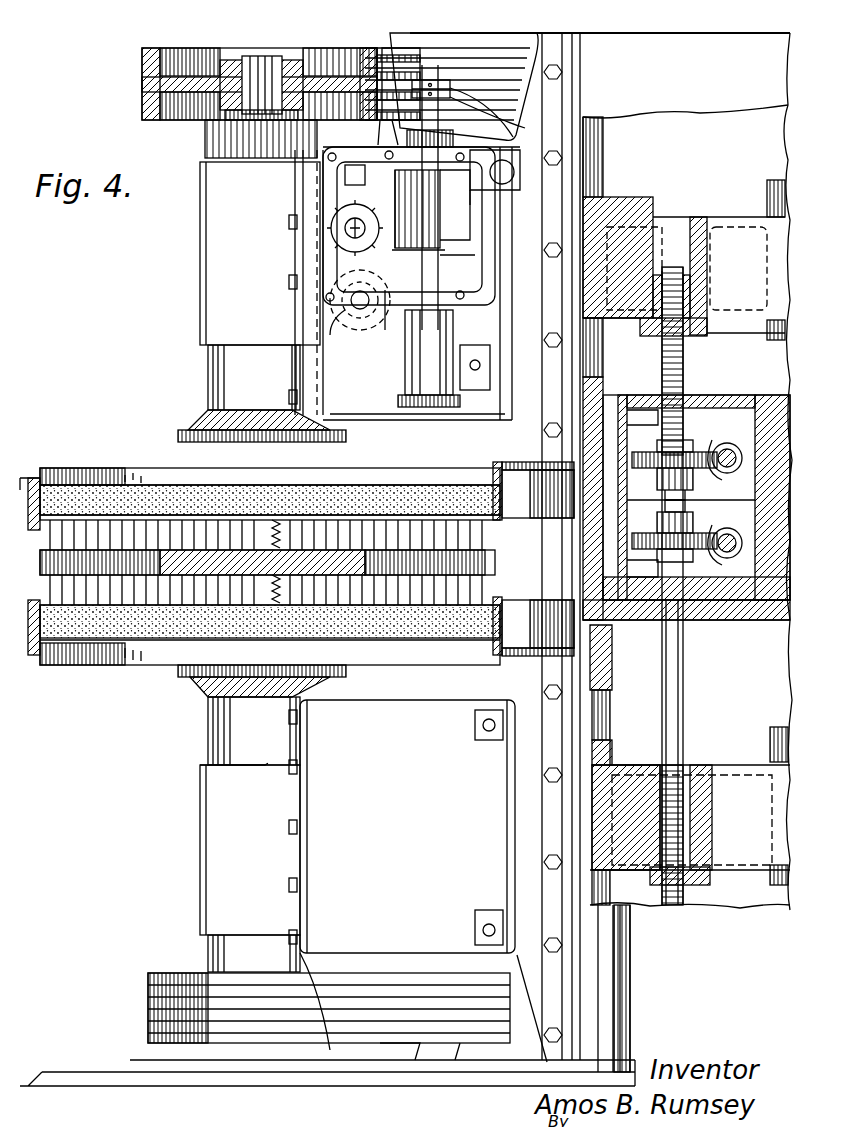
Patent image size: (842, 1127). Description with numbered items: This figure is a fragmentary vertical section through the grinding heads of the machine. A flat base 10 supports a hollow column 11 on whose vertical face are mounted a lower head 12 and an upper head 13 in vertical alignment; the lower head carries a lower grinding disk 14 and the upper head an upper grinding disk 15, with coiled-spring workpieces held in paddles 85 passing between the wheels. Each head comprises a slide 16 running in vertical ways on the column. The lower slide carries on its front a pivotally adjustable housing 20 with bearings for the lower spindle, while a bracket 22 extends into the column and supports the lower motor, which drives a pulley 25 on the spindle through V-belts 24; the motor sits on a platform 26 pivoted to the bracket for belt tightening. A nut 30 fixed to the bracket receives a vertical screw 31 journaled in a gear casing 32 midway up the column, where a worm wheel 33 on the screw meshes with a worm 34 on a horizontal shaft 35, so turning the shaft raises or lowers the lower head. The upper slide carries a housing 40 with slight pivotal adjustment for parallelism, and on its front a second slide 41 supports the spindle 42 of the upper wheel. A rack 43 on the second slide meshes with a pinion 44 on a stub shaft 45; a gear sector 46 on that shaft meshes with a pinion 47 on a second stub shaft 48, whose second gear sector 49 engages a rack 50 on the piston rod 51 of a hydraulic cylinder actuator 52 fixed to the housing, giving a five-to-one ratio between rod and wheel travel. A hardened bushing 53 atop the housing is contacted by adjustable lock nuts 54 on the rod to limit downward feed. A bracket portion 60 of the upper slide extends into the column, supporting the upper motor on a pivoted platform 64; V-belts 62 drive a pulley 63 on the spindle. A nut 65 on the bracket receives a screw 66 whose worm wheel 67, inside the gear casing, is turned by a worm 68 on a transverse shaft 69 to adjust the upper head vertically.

The flat base 10 is at (245, 1088).
The hollow column 11 is at (600, 905).
The lower head 12 is at (194, 831).
The upper head 13 is at (192, 268).
The lower grinding disk 14 is at (80, 620).
The upper grinding disk 15 is at (88, 500).
The slide 16 is at (523, 318).
The housing 20 is at (358, 720).
The bracket 22 is at (635, 770).
The V-belts 24 is at (360, 1045).
The pulley 25 is at (168, 973).
The platform 26 is at (772, 730).
The nut 30 is at (700, 876).
The screw 31 is at (685, 738).
The gear casing 32 is at (715, 598).
The worm wheel 33 is at (640, 538).
The worm 34 is at (692, 494).
The horizontal shaft 35 is at (742, 528).
The housing 40 is at (330, 365).
The second slide 41 is at (298, 140).
The spindle 42 is at (257, 72).
The rack 43 is at (340, 337).
The pinion 44 is at (338, 292).
The stub shaft 45 is at (338, 318).
The gear sector 46 is at (390, 317).
The pinion 47 is at (345, 225).
The second stub shaft 48 is at (355, 212).
The second gear sector 49 is at (410, 215).
The rack 50 is at (438, 225).
The shaft or piston rod 51 is at (440, 275).
The hydraulic cylinder actuator 52 is at (428, 348).
The hardened bushing 53 is at (505, 156).
The adjustable lock nuts 54 is at (475, 197).
The bracket portion 60 is at (722, 230).
The V-belts 62 is at (395, 55).
The pulley 63 is at (150, 85).
The platform 64 is at (770, 182).
The nut 65 is at (702, 330).
The screw 66 is at (665, 364).
The worm wheel 67 is at (700, 452).
The worm 68 is at (728, 445).
The shaft 69 is at (740, 450).
The paddles 85 is at (500, 556).